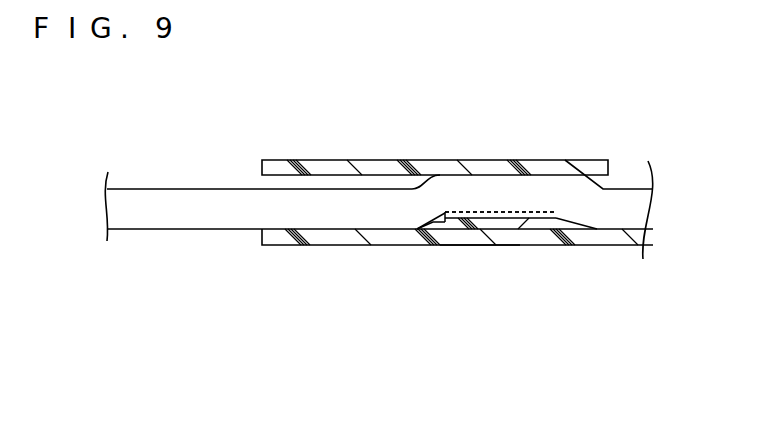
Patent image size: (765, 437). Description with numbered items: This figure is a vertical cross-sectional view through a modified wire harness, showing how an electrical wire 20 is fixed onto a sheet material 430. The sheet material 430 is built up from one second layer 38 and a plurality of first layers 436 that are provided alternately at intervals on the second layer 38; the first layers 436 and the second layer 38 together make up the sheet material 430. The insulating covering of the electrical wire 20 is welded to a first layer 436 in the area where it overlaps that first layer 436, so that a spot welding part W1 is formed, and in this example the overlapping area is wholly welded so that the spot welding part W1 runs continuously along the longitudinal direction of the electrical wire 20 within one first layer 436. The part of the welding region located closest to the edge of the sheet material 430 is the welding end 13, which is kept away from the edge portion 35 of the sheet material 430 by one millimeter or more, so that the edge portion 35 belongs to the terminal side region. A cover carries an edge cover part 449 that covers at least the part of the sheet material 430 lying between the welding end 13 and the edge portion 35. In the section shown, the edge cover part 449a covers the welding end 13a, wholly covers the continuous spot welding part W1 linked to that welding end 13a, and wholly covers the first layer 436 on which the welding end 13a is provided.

The electrical wire 20 is at (163, 200).
The edge cover part 449a is at (347, 160).
The edge cover part 449 is at (435, 139).
The welding end 13a is at (463, 212).
The welding end 13 is at (500, 164).
The spot welding part W1 is at (538, 208).
The edge portion 35 is at (263, 240).
The second layer 38 is at (477, 245).
The first layer 436 is at (536, 216).
The sheet material 430 is at (558, 298).